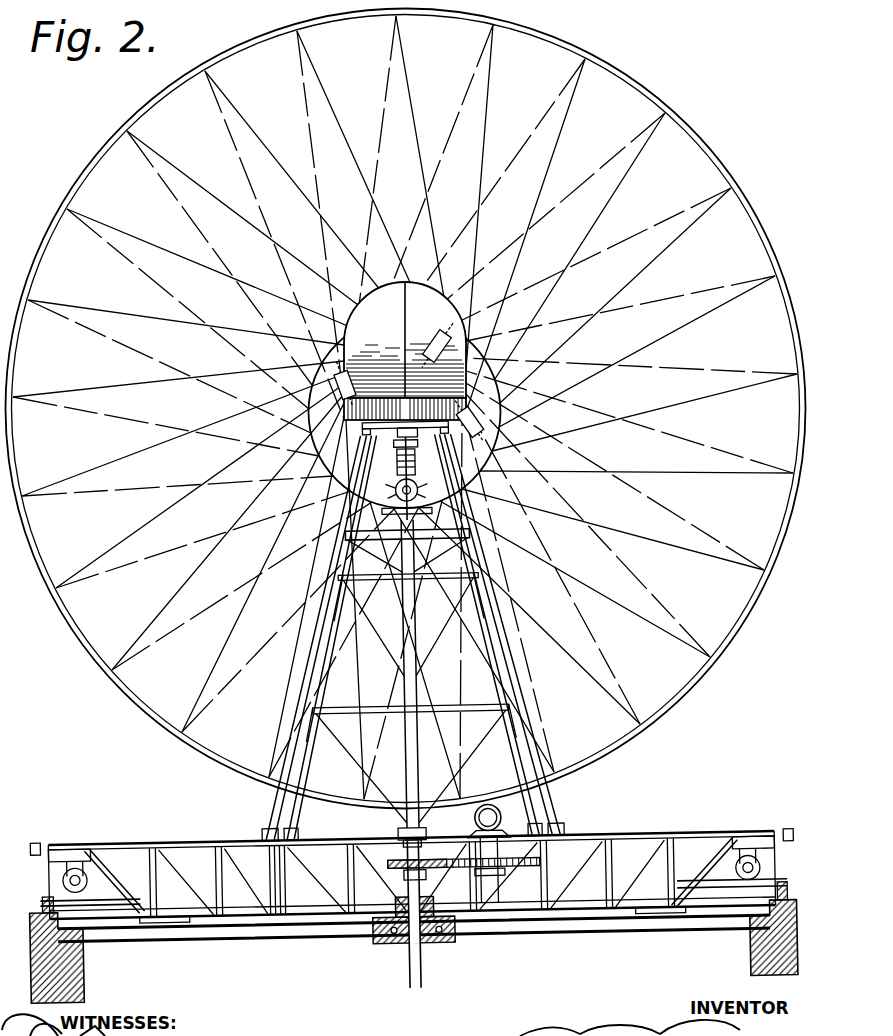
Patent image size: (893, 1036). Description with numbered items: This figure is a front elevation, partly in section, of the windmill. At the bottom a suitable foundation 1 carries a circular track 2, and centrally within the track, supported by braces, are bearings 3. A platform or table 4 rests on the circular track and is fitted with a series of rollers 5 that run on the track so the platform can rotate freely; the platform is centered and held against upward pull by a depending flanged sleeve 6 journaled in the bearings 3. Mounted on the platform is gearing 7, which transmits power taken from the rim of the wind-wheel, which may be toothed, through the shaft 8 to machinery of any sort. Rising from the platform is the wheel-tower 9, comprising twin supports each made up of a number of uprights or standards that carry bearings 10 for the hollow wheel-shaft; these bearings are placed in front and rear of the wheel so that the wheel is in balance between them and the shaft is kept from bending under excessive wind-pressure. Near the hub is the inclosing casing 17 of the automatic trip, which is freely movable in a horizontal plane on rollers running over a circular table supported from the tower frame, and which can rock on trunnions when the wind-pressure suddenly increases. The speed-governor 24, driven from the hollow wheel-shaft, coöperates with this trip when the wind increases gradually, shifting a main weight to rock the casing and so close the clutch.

The foundation 1 is at (72, 957).
The circular track 2 is at (33, 891).
The bearings 3 is at (367, 943).
The platform or table 4 is at (622, 837).
The rollers 5 is at (79, 866).
The depending flanged sleeve 6 is at (420, 944).
The gearing 7 is at (497, 822).
The shaft 8 is at (399, 978).
The wheel-tower 9 is at (473, 597).
The bearings 10 is at (306, 408).
The inclosing casing 17 is at (366, 219).
The governor 24 is at (475, 492).